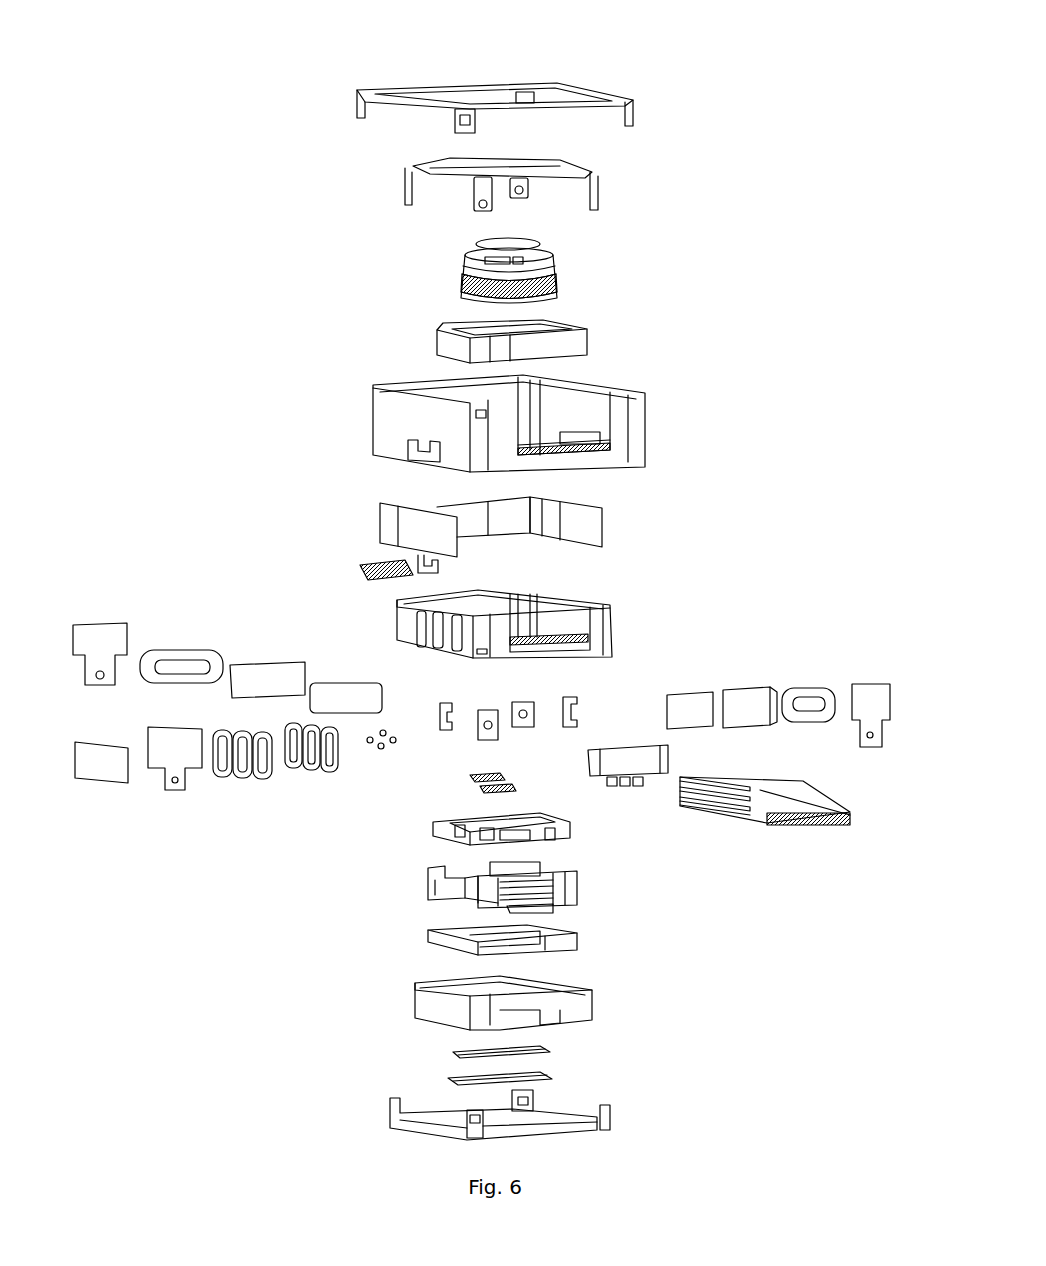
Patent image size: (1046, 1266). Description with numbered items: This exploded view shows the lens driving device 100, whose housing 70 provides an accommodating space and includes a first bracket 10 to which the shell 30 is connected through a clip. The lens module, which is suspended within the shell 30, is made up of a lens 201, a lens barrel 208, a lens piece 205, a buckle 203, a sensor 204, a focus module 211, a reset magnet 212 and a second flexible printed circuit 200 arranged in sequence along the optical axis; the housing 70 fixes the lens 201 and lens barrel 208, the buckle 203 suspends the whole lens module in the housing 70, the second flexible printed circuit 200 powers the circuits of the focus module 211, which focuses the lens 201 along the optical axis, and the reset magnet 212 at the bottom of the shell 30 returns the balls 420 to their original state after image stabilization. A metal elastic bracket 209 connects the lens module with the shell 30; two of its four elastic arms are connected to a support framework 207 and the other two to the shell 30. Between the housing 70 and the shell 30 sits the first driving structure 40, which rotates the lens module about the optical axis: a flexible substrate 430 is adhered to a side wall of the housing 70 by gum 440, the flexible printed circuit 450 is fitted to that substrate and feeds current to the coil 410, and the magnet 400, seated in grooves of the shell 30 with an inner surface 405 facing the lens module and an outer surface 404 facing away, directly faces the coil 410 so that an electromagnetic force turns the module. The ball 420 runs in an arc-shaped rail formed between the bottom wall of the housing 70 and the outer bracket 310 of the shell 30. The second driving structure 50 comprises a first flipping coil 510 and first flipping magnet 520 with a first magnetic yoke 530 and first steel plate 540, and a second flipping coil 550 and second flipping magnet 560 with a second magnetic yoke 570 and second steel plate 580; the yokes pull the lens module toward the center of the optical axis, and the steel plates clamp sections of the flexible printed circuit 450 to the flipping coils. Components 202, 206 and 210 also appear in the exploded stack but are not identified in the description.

The lens driving device 100 is at (264, 45).
The first bracket 10 is at (605, 100).
The elastic bracket 209 is at (568, 168).
The lens 201 is at (560, 270).
The lens barrel 208 is at (585, 340).
The housing 70 is at (632, 428).
The flexible printed circuit 450 is at (605, 523).
The shell 30 is at (612, 616).
The buckle 203 is at (578, 706).
The reset magnet 212 is at (505, 780).
The focus module 211 is at (668, 762).
The lower elastic member 202 is at (572, 833).
The sensor holder 206 is at (578, 876).
The plate 210 is at (578, 940).
The support framework 207 is at (593, 1004).
The lens piece 205 is at (540, 1056).
The sensor 204 is at (545, 1082).
The outer bracket 310 is at (612, 1122).
The second driving structure 50 is at (375, 625).
The first steel plate 540 is at (115, 628).
The first flipping coil 510 is at (210, 655).
The first flipping magnet 520 is at (290, 672).
The first magnetic yoke 530 is at (368, 690).
The gum 440 is at (110, 778).
The flexible substrate 430 is at (185, 770).
The coil 410 is at (265, 778).
The outer surface 404 is at (315, 768).
The magnet 400 is at (335, 772).
The inner surface 405 is at (372, 750).
The ball 420 is at (395, 742).
The first driving structure 40 is at (392, 813).
The second magnetic yoke 570 is at (695, 696).
The second flipping magnet 560 is at (763, 700).
The second flipping coil 550 is at (820, 690).
The second steel plate 580 is at (885, 686).
The second flexible printed circuit 200 is at (810, 793).